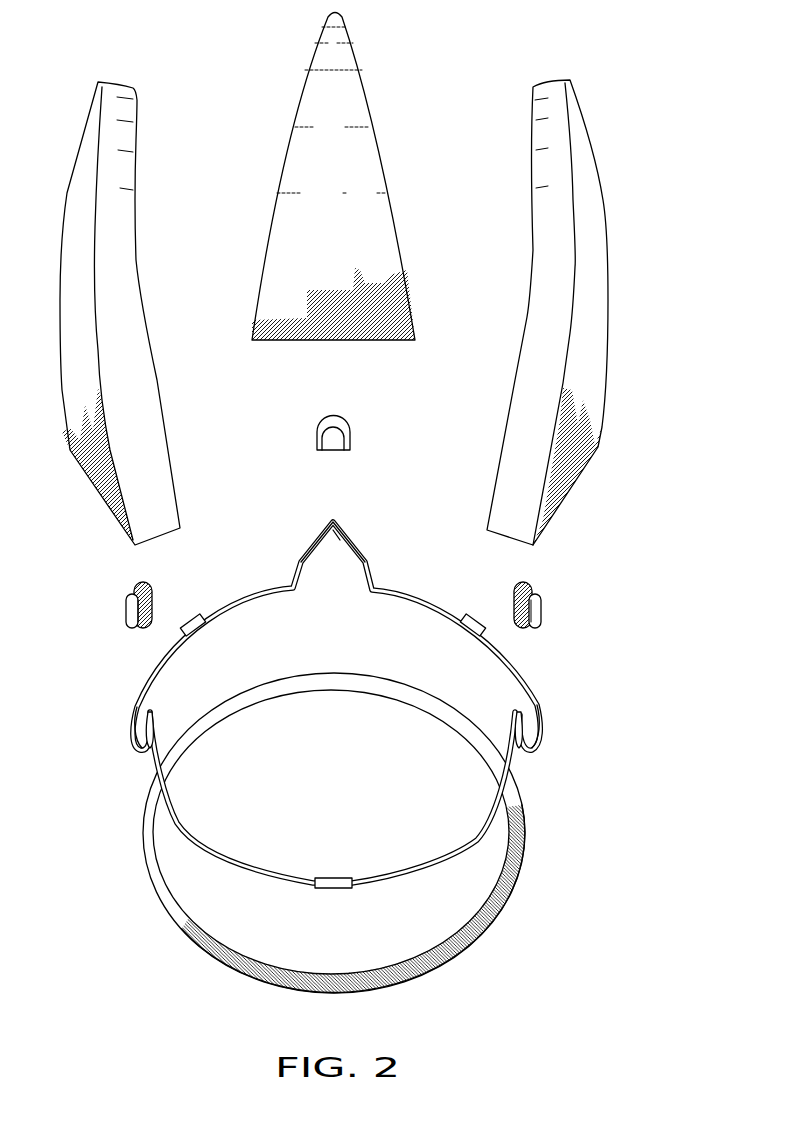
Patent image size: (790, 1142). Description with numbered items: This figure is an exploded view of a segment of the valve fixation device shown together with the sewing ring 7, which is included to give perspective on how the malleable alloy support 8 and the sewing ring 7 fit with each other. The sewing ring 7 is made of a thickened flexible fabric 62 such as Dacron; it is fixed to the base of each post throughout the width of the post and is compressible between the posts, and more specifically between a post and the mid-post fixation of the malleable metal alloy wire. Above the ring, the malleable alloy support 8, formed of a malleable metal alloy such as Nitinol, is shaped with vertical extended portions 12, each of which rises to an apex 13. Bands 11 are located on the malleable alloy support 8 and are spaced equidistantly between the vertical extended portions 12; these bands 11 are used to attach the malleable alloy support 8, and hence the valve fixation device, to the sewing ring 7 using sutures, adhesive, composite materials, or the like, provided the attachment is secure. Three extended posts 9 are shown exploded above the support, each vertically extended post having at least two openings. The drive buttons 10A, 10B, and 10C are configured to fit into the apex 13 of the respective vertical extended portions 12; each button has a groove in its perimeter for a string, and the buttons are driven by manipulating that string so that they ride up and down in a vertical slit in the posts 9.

The sewing ring 7 is at (520, 838).
The malleable alloy support 8 is at (535, 693).
The extended posts 9 is at (128, 268).
The drive button 10A is at (543, 615).
The drive button 10B is at (128, 590).
The drive button 10C is at (350, 443).
The bands 11 is at (197, 630).
The vertical extended portions 12 is at (358, 547).
The apex 13 is at (325, 543).
The fabric 62 is at (488, 923).